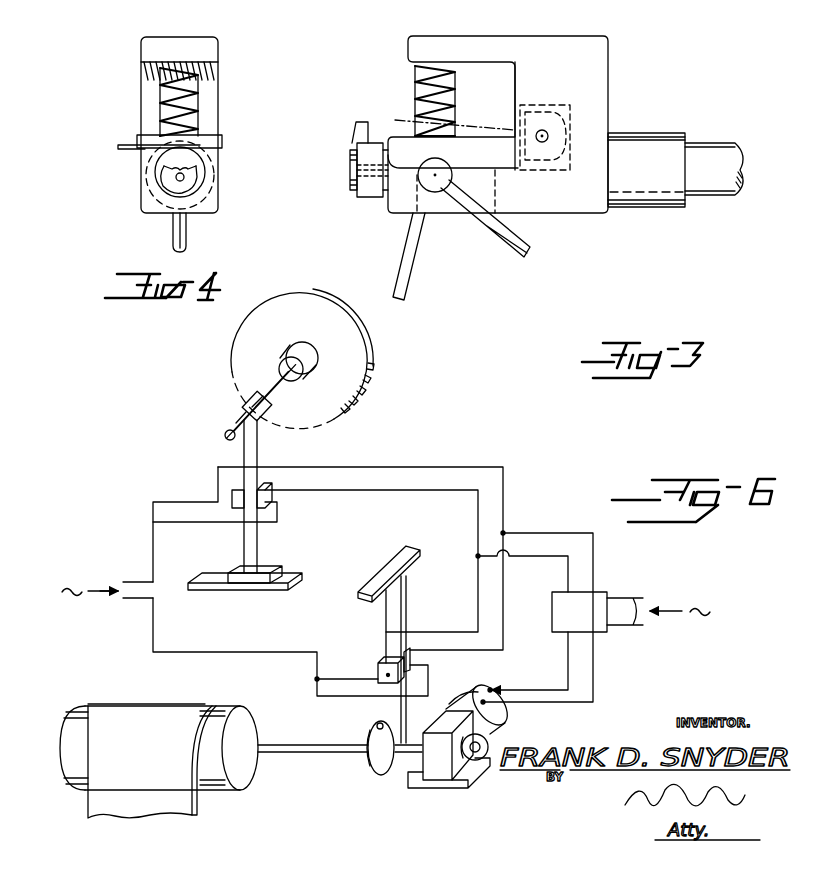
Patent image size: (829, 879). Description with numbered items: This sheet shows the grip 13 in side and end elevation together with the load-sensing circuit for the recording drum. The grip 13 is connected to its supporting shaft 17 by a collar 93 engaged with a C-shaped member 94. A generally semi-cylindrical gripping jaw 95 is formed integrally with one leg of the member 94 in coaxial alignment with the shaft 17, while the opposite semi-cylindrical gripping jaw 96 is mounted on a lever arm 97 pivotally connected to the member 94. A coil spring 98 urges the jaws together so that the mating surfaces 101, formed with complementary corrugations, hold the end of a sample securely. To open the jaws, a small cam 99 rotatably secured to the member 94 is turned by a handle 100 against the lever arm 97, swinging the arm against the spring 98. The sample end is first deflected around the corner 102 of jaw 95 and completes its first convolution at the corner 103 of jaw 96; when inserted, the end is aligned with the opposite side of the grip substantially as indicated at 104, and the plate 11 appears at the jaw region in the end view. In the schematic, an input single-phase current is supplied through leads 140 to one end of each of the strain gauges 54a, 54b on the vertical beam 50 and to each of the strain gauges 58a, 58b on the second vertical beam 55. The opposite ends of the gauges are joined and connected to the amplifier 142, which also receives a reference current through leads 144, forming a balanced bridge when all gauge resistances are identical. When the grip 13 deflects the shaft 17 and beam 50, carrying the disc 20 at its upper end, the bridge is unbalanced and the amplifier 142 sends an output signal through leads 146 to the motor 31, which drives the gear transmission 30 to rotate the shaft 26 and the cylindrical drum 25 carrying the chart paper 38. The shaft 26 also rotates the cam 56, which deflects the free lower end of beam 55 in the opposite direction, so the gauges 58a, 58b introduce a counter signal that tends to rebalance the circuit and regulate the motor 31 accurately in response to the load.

In FIG. 4, the actuating plate 11 is at (128, 144).
In FIG. 3, the actuating plate 11 is at (372, 128).
In FIG. 4, the grip 13 is at (120, 72).
In FIG. 3, the grip 13 is at (635, 63).
In FIG. 3, the supporting shaft 17 is at (715, 156).
In FIG. 6, the supporting shaft 17 is at (275, 392).
In FIG. 6, the disc 20 is at (358, 392).
In FIG. 6, the cylindrical drum 25 is at (246, 722).
In FIG. 6, the shaft 26 is at (305, 753).
In FIG. 6, the gear transmission 30 is at (440, 776).
In FIG. 6, the motor 31 is at (500, 710).
In FIG. 6, the roll of chart paper 38 is at (186, 810).
In FIG. 6, the vertical beam 50 is at (258, 446).
In FIG. 6, the strain gauge 54a is at (270, 497).
In FIG. 6, the strain gauge 54b is at (231, 497).
In FIG. 6, the second vertical beam 55 is at (398, 596).
In FIG. 6, the cam 56 is at (380, 770).
In FIG. 6, the strain gauge 58a is at (380, 672).
In FIG. 6, the strain gauge 58b is at (412, 655).
In FIG. 4, the collar 93 is at (150, 208).
In FIG. 3, the collar 93 is at (640, 142).
In FIG. 4, the C-shaped member 94 is at (185, 42).
In FIG. 3, the C-shaped member 94 is at (490, 42).
In FIG. 4, the semi-cylindrical gripping jaw 95 is at (194, 184).
In FIG. 3, the semi-cylindrical gripping jaw 95 is at (357, 182).
In FIG. 4, the semi-cylindrical gripping jaw 96 is at (170, 160).
In FIG. 3, the semi-cylindrical gripping jaw 96 is at (353, 152).
In FIG. 4, the lever arm 97 is at (212, 138).
In FIG. 3, the lever arm 97 is at (400, 137).
In FIG. 4, the coil spring 98 is at (200, 94).
In FIG. 3, the coil spring 98 is at (458, 88).
In FIG. 3, the cam 99 is at (438, 185).
In FIG. 4, the handle 100 is at (175, 240).
In FIG. 3, the handle 100 is at (530, 250).
In FIG. 4, the mating surfaces 101 is at (196, 170).
In FIG. 3, the mating surfaces 101 is at (357, 173).
In FIG. 4, the corner 102 is at (170, 185).
In FIG. 4, the corner 103 is at (166, 172).
In FIG. 4, the sample end alignment position 104 is at (200, 178).
In FIG. 6, the leads 140 is at (140, 580).
In FIG. 6, the amplifier 142 is at (605, 592).
In FIG. 6, the leads 144 is at (637, 628).
In FIG. 6, the leads 146 is at (570, 660).